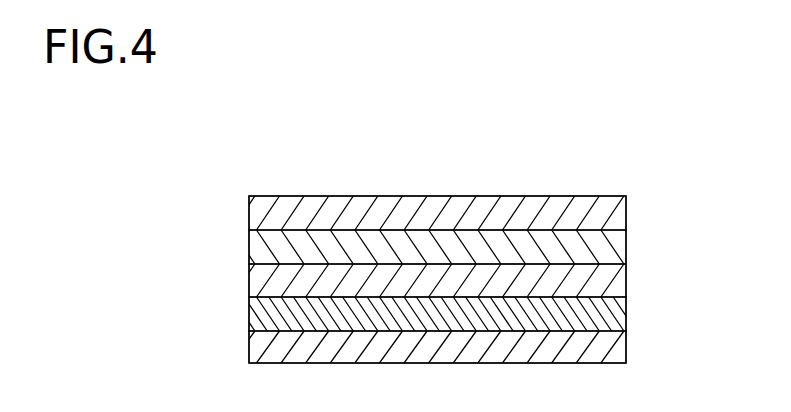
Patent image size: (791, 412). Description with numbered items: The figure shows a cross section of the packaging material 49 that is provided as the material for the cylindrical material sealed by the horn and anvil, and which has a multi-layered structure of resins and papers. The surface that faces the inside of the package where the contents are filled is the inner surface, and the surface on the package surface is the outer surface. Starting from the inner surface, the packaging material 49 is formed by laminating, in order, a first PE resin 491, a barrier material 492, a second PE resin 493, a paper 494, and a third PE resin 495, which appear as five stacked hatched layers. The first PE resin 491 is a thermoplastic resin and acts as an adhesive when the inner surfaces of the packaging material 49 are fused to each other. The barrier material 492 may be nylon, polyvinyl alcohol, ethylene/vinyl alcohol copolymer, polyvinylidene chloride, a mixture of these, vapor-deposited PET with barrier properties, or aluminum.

The packaging material 49 is at (454, 178).
The first polyethylene resin 491 is at (626, 345).
The barrier material 492 is at (626, 313).
The second polyethylene resin 493 is at (626, 279).
The paper 494 is at (626, 245).
The third polyethylene resin 495 is at (626, 215).